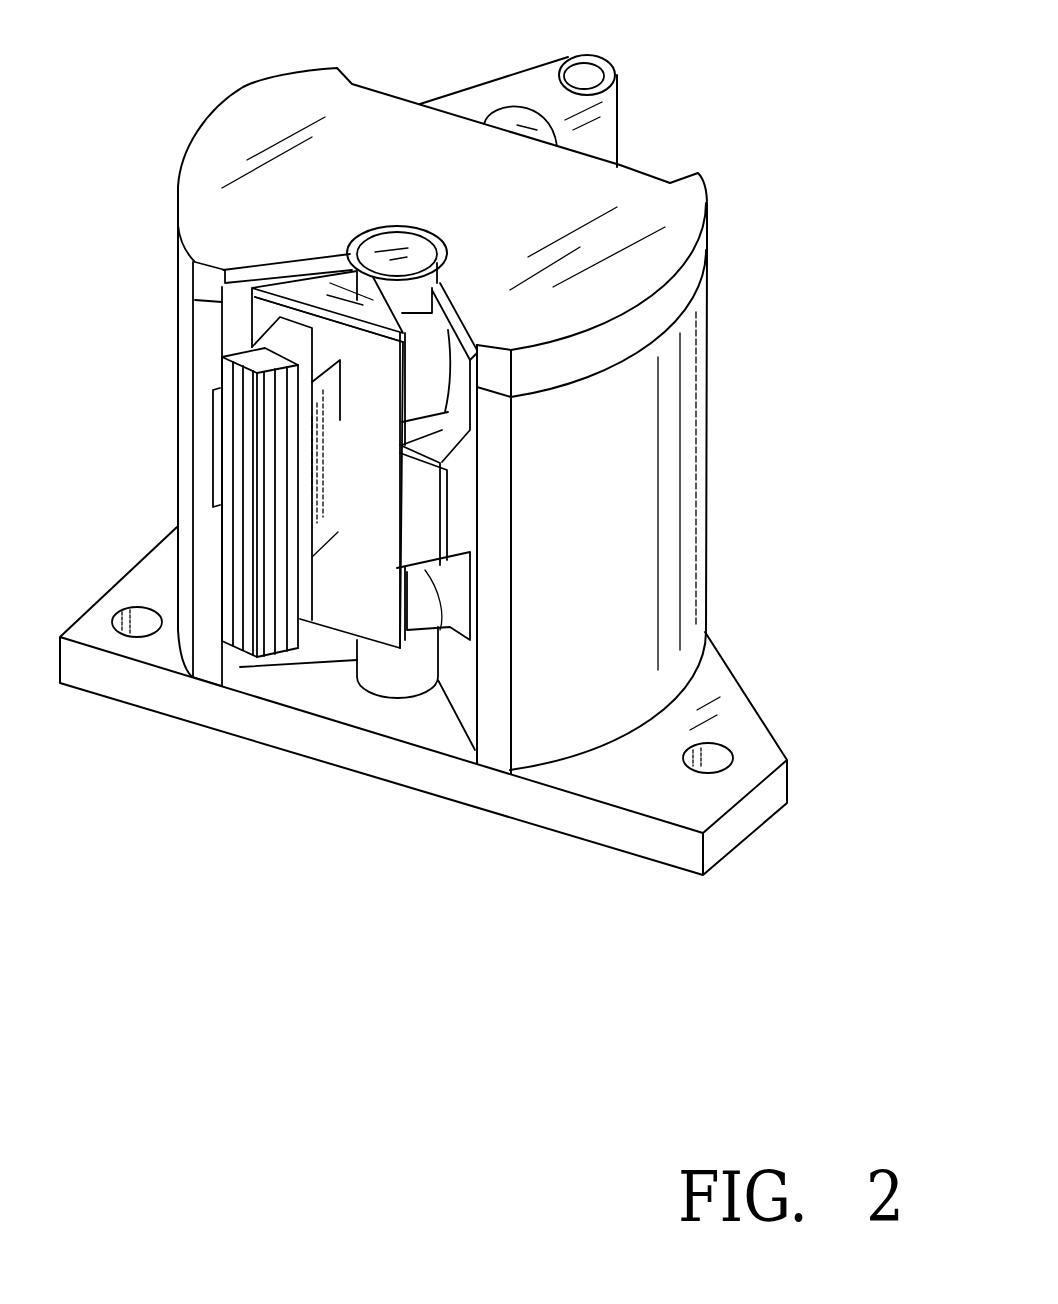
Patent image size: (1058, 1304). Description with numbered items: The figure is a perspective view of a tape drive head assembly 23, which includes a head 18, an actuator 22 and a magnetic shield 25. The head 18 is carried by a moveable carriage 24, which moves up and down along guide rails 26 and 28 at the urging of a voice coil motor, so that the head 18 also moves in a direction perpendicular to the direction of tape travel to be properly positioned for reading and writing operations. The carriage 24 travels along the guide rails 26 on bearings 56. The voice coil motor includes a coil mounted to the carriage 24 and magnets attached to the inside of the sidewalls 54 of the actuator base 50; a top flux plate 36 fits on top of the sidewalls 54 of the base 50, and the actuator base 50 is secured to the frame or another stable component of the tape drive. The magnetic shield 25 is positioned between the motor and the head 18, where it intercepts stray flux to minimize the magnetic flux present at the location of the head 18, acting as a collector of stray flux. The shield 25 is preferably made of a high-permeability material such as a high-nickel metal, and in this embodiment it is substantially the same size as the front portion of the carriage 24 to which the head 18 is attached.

The head 18 is at (247, 522).
The actuator 22 is at (792, 266).
The head assembly 23 is at (168, 372).
The carriage 24 is at (458, 510).
The magnetic shield 25 is at (401, 516).
The guide rail 26 is at (393, 240).
The guide rail 28 is at (520, 118).
The top flux plate 36 is at (645, 183).
The actuator base 50 is at (722, 672).
The sidewalls 54 is at (688, 433).
The bearings 56 is at (430, 382).